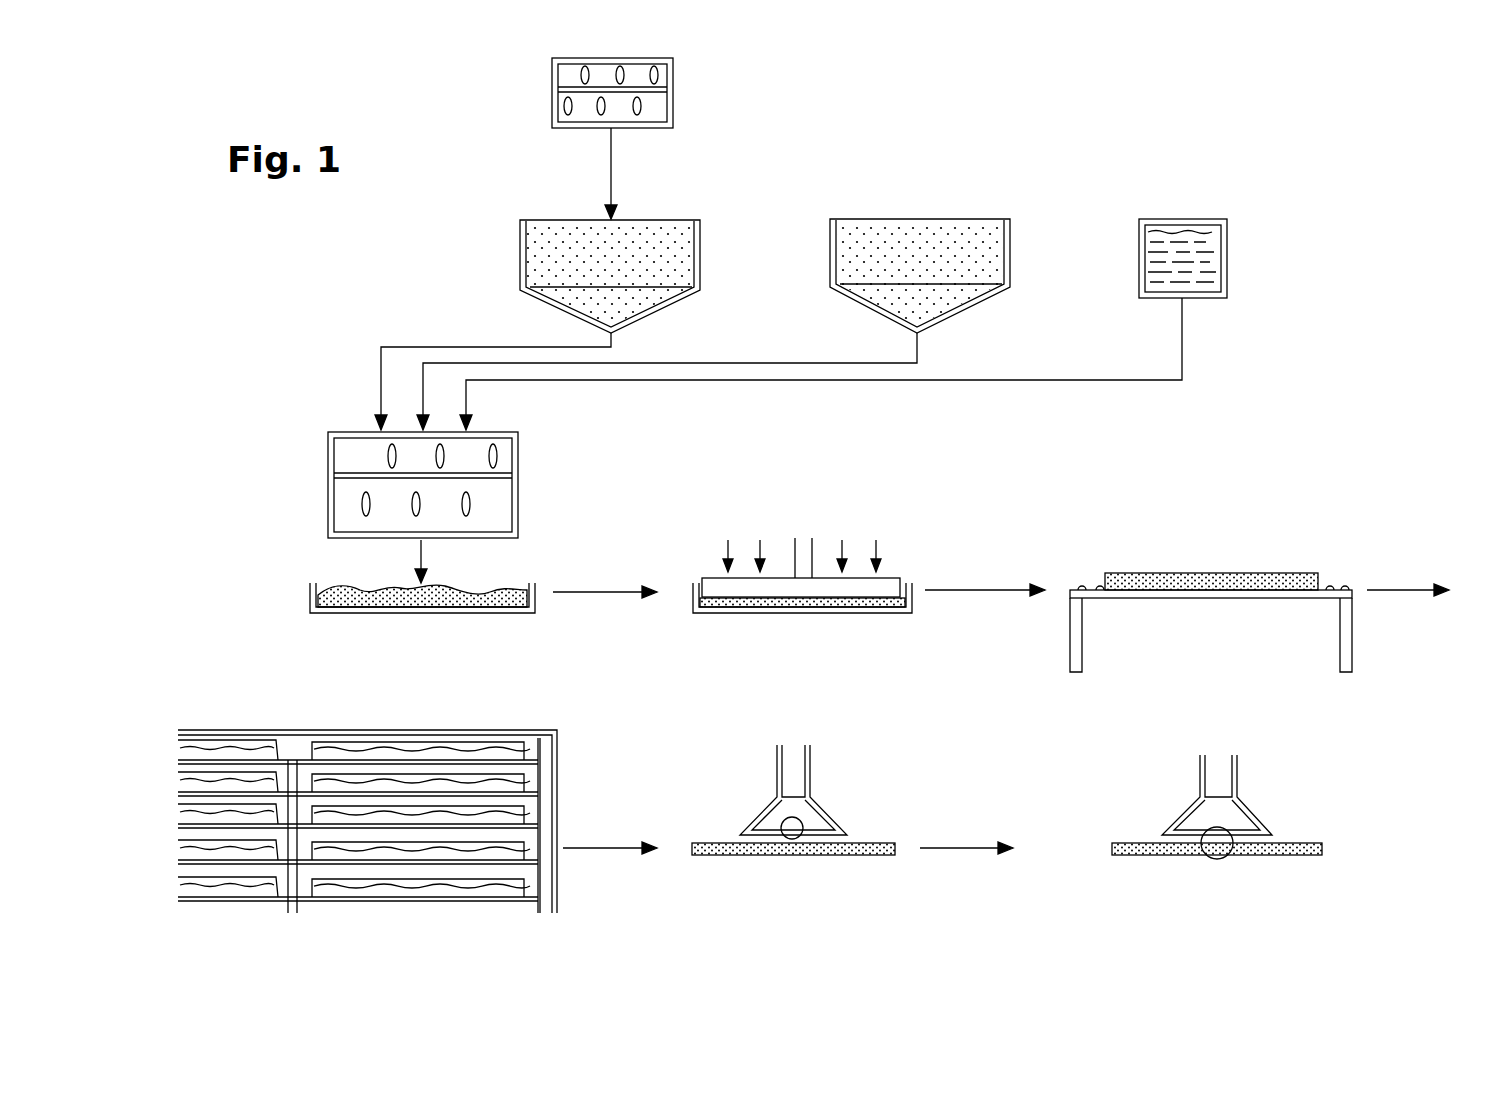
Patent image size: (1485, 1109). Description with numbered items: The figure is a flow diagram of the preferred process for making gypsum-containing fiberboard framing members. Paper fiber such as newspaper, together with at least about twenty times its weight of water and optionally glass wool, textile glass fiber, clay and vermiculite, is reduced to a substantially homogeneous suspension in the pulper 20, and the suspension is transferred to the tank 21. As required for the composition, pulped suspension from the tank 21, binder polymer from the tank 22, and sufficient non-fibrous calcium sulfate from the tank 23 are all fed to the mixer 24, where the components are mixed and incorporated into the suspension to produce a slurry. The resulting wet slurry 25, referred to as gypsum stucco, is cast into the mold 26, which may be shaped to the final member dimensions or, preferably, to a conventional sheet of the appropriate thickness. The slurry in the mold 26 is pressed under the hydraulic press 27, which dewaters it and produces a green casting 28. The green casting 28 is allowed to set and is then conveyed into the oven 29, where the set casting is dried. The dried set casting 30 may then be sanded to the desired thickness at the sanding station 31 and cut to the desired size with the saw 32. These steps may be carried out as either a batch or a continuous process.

The pulper 20 is at (675, 88).
The tank 21 is at (700, 245).
The tank 22 is at (1010, 240).
The tank 23 is at (1228, 257).
The mixer 24 is at (518, 457).
The wet slurry 25 is at (490, 586).
The mold 26 is at (523, 615).
The hydraulic press 27 is at (898, 578).
The green casting 28 is at (858, 615).
The oven 29 is at (535, 733).
The dried set casting 30 is at (895, 843).
The sanding station 31 is at (792, 828).
The saw 32 is at (1220, 835).